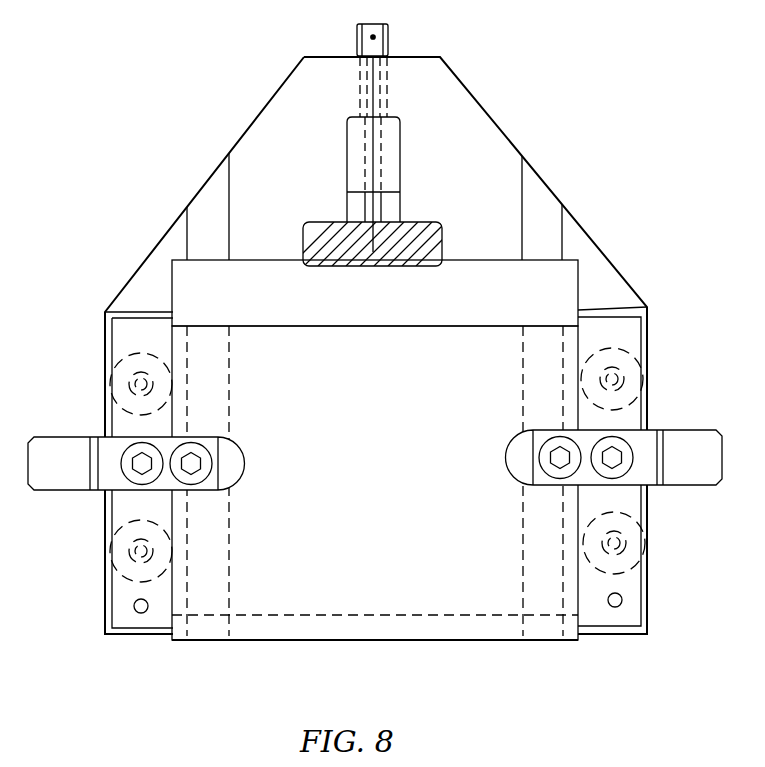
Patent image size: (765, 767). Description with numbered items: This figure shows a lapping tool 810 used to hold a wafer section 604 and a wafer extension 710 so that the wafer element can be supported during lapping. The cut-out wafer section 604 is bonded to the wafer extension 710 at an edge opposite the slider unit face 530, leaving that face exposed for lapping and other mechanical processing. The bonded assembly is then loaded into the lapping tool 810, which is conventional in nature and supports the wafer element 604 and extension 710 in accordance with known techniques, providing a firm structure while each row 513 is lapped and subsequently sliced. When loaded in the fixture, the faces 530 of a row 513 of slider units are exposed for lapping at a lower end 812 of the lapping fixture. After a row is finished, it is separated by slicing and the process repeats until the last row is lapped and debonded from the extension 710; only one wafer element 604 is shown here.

The lapping tool 810 is at (290, 100).
The wafer extension 710 is at (478, 286).
The wafer section 604 is at (482, 373).
The lower end 812 is at (106, 625).
The row 513 is at (398, 630).
The slider unit face 530 is at (283, 641).